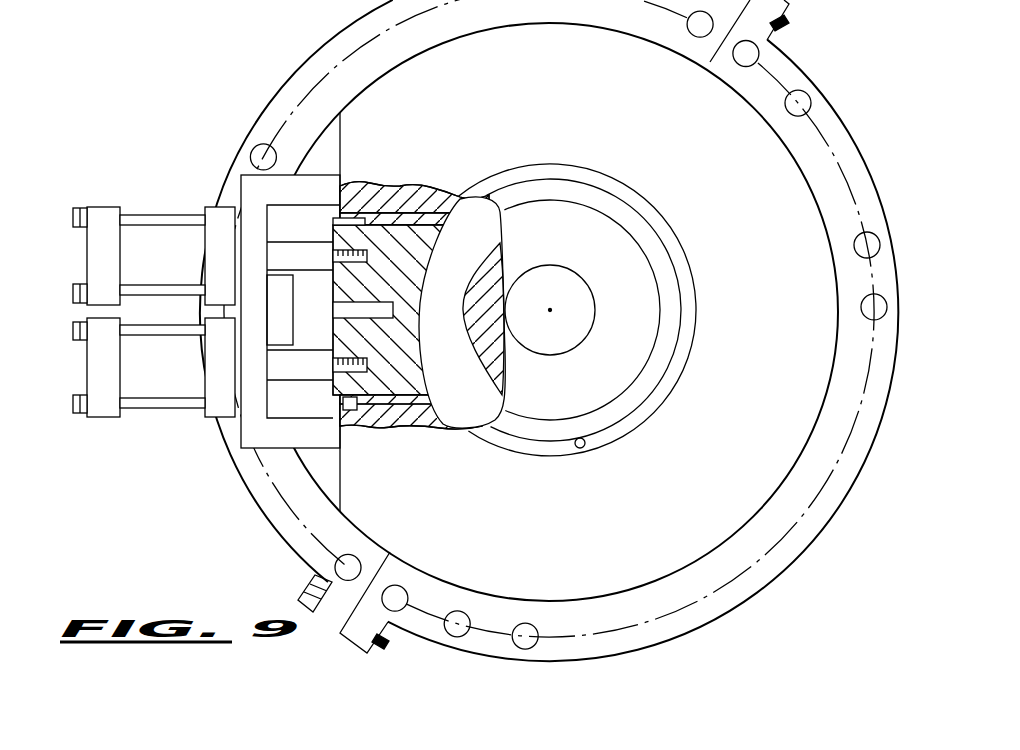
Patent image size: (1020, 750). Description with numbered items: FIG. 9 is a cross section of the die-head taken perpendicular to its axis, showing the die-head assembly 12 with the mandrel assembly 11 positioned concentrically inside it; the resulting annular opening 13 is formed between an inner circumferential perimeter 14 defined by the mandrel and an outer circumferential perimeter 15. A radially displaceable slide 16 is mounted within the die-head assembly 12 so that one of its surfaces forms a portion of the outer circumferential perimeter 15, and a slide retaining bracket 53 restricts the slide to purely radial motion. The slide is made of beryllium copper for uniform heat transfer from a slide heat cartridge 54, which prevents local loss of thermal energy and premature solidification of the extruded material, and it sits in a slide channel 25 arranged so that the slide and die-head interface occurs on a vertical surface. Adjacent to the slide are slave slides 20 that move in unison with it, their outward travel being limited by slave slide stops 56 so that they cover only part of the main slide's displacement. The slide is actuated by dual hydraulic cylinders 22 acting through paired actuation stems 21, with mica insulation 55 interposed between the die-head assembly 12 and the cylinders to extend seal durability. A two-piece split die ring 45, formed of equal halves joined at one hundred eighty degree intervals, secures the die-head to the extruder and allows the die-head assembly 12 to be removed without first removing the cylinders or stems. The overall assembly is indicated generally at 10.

The coupling assembly 10 is at (798, 570).
The mandrel assembly 11 is at (606, 238).
The die-head assembly 12 is at (828, 118).
The annular opening 13 is at (535, 456).
The inner circumferential perimeter 14 is at (580, 438).
The outer circumferential perimeter 15 is at (627, 432).
The radially displaceable slide 16 is at (432, 226).
The slave slide 20 is at (410, 190).
The actuation stem 21 is at (303, 246).
The hydraulic cylinder 22 is at (140, 237).
The slide channel 25 is at (432, 422).
The two-piece split die ring 45 is at (790, 72).
The slide retaining bracket 53 is at (253, 440).
The slide heat cartridge 54 is at (371, 308).
The mica insulation 55 is at (230, 183).
The slave slide stop 56 is at (352, 216).